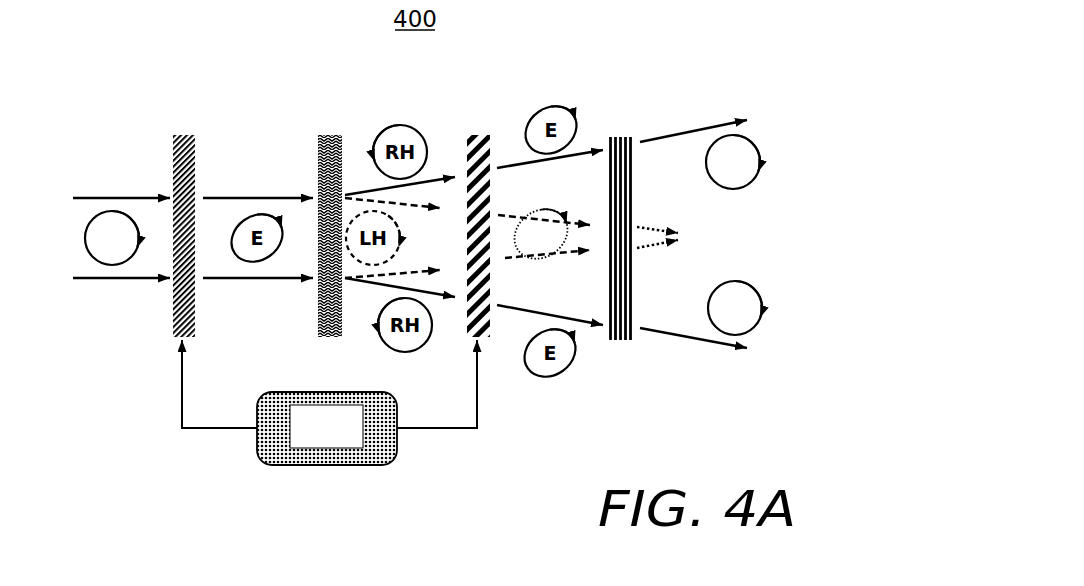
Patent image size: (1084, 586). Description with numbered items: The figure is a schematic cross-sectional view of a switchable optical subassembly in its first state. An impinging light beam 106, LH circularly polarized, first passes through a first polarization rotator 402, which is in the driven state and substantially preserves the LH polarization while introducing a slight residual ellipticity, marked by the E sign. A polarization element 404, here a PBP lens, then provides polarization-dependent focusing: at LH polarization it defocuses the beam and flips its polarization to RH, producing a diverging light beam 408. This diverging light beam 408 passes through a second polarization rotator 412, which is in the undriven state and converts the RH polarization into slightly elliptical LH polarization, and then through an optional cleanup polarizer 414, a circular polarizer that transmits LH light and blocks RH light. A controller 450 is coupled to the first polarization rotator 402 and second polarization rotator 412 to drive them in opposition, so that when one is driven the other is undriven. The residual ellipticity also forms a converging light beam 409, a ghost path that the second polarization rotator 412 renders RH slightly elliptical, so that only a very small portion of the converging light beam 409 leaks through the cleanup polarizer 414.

The impinging light beam 106 is at (111, 195).
The first polarization rotator 402 is at (186, 136).
The polarization element 404 is at (331, 134).
The converging light beam 409 is at (421, 228).
The second polarization rotator 412 is at (478, 134).
The cleanup polarizer 414 is at (622, 137).
The diverging light beam 408 is at (706, 130).
The controller 450 is at (307, 438).